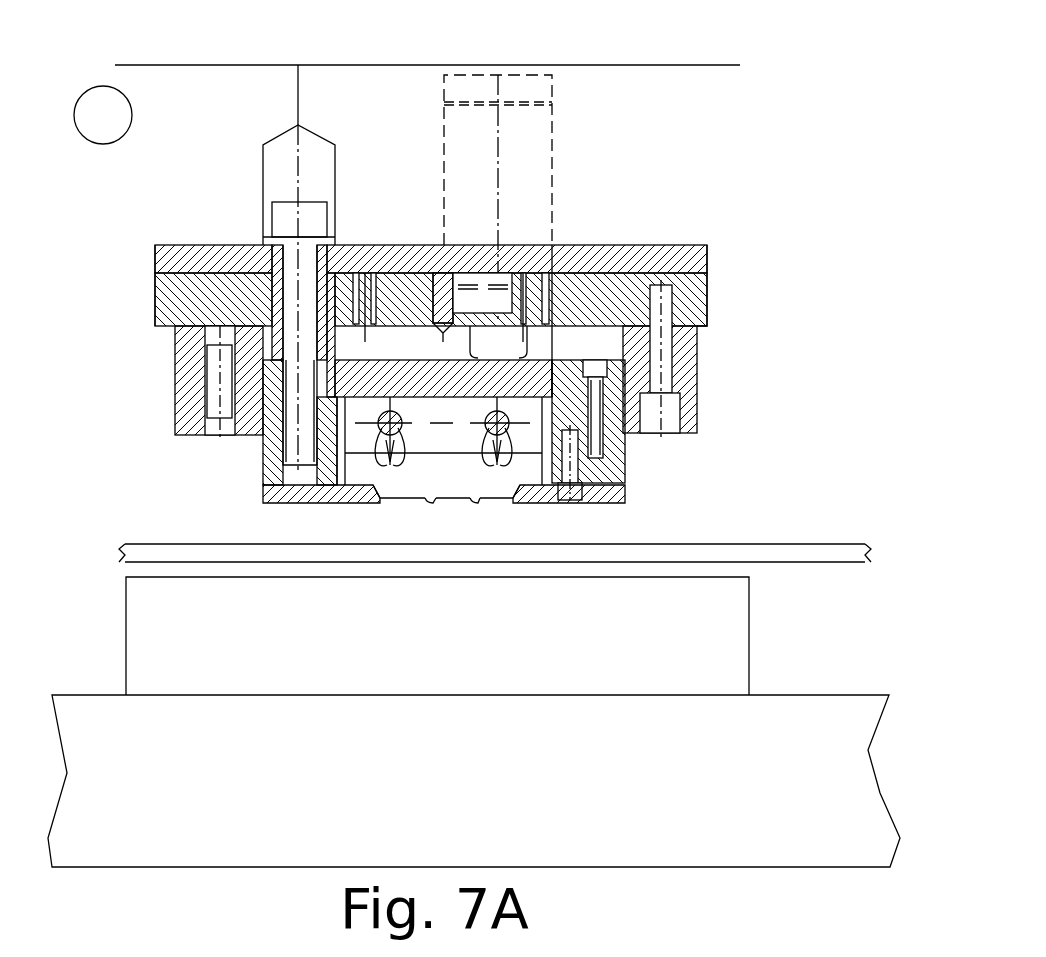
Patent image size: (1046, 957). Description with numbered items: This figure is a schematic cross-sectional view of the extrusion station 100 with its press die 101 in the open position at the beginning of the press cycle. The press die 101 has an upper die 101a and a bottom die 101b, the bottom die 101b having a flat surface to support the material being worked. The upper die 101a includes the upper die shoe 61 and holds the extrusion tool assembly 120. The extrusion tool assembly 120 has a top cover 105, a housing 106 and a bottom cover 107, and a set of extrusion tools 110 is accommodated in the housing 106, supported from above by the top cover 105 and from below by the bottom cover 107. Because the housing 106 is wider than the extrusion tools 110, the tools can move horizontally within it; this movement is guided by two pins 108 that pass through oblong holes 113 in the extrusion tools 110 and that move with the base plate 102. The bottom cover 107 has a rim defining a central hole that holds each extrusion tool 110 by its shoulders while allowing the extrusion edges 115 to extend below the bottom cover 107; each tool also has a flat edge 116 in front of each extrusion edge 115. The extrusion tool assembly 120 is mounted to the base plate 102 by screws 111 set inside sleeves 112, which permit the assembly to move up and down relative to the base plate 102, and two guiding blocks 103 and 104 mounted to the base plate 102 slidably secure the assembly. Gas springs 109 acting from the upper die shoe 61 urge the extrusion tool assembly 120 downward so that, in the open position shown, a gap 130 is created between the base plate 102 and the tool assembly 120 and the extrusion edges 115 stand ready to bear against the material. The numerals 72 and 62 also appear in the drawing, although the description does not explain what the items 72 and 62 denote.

The extrusion station 100 is at (103, 115).
The upper die shoe 61 is at (657, 85).
The gas springs 109 is at (538, 158).
The screws 111 is at (290, 218).
The sleeves 112 is at (268, 243).
The upper die 101a is at (605, 255).
The base plate 102 is at (712, 291).
The guiding block 103 is at (697, 363).
The press die 101 is at (772, 353).
The gap 130 is at (605, 340).
The guiding block 104 is at (237, 433).
The top cover 105 is at (630, 433).
The housing 106 is at (617, 470).
The bottom cover 107 is at (605, 503).
The pins 108 is at (503, 433).
The extrusion tools 110 is at (452, 478).
The oblong holes 113 is at (383, 467).
The flat edge 116 is at (420, 503).
The extrusion edges 115 is at (425, 505).
The extrusion tool assembly 120 is at (257, 478).
The strip material 72 is at (648, 552).
The bottom die 101b is at (735, 615).
The lower press bed 62 is at (752, 710).